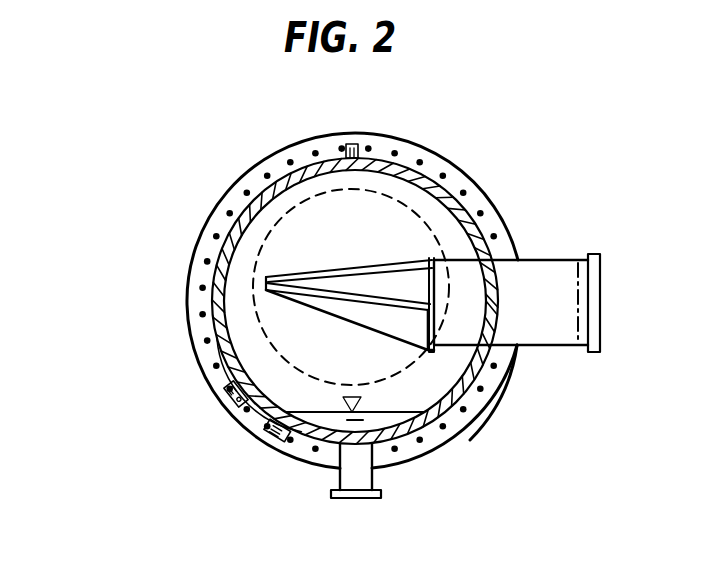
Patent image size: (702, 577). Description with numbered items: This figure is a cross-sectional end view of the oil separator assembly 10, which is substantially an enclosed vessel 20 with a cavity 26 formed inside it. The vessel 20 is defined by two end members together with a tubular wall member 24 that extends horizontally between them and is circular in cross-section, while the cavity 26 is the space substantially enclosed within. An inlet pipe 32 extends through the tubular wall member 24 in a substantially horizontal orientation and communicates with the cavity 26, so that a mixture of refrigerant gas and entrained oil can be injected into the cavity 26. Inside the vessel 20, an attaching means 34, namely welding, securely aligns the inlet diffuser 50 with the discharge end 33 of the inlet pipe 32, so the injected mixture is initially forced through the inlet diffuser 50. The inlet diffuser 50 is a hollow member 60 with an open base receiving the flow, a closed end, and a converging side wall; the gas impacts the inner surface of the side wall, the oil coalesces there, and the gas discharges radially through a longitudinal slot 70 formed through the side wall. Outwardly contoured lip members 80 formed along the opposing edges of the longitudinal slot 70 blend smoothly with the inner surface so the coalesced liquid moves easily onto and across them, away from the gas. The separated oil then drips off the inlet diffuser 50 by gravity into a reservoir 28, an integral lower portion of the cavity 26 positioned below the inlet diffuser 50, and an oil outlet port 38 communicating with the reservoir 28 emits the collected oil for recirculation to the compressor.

The oil separator assembly 10 is at (98, 116).
The vessel 20 is at (188, 283).
The tubular wall member 24 is at (228, 376).
The cavity 26 is at (398, 204).
The reservoir 28 is at (296, 440).
The inlet pipe 32 is at (562, 258).
The discharge end 33 is at (447, 286).
The attaching means 34 is at (497, 382).
The oil outlet port 38 is at (383, 493).
The inlet diffuser 50 is at (334, 315).
The hollow member 60 is at (391, 316).
The longitudinal slot 70 is at (386, 284).
The outwardly contoured lip members 80 is at (327, 297).